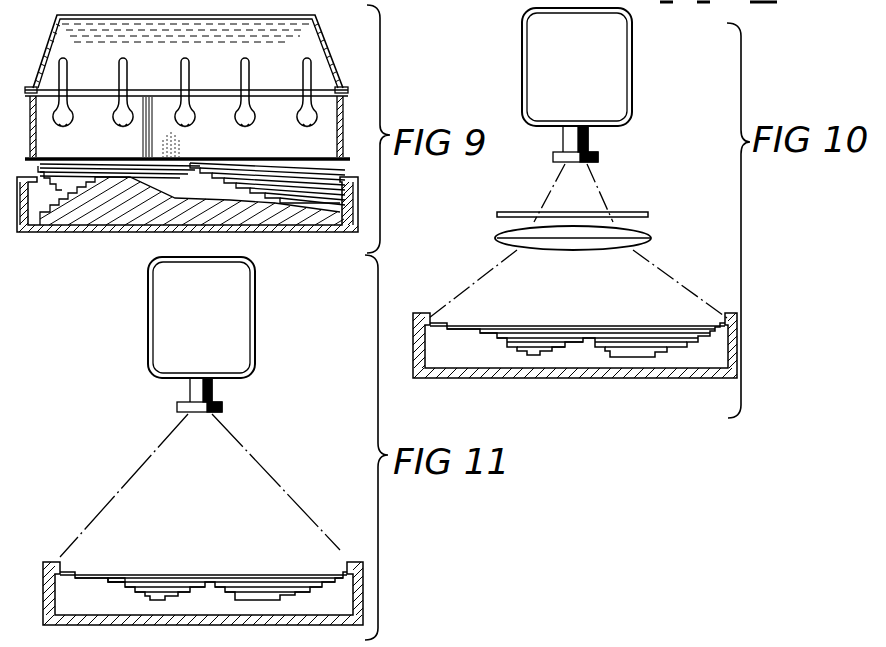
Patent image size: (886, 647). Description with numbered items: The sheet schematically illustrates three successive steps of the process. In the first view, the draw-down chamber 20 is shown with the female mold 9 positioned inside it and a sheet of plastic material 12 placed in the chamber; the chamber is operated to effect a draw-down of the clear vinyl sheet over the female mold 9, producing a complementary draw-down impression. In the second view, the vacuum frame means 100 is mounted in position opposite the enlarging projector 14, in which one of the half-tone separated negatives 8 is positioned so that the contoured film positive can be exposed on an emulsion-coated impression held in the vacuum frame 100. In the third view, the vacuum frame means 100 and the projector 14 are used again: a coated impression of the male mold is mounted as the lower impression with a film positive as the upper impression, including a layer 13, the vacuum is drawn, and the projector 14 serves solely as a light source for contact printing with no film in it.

In FIG. 10, the half-tone separated negative 8 is at (620, 213).
In FIG. 9, the female mold 9 is at (107, 208).
In FIG. 9, the sheet of plastic material 12 is at (323, 178).
In FIG. 10, the sheet of plastic material 12 is at (497, 335).
In FIG. 11, the sheet of plastic material 12 is at (133, 583).
In FIG. 11, the layer of stack 13 is at (110, 585).
In FIG. 10, the enlarging projector 14 is at (631, 90).
In FIG. 11, the enlarging projector 14 is at (256, 343).
In FIG. 9, the draw-down chamber 20 is at (338, 69).
In FIG. 10, the vacuum frame means 100 is at (667, 378).
In FIG. 11, the vacuum frame means 100 is at (343, 617).